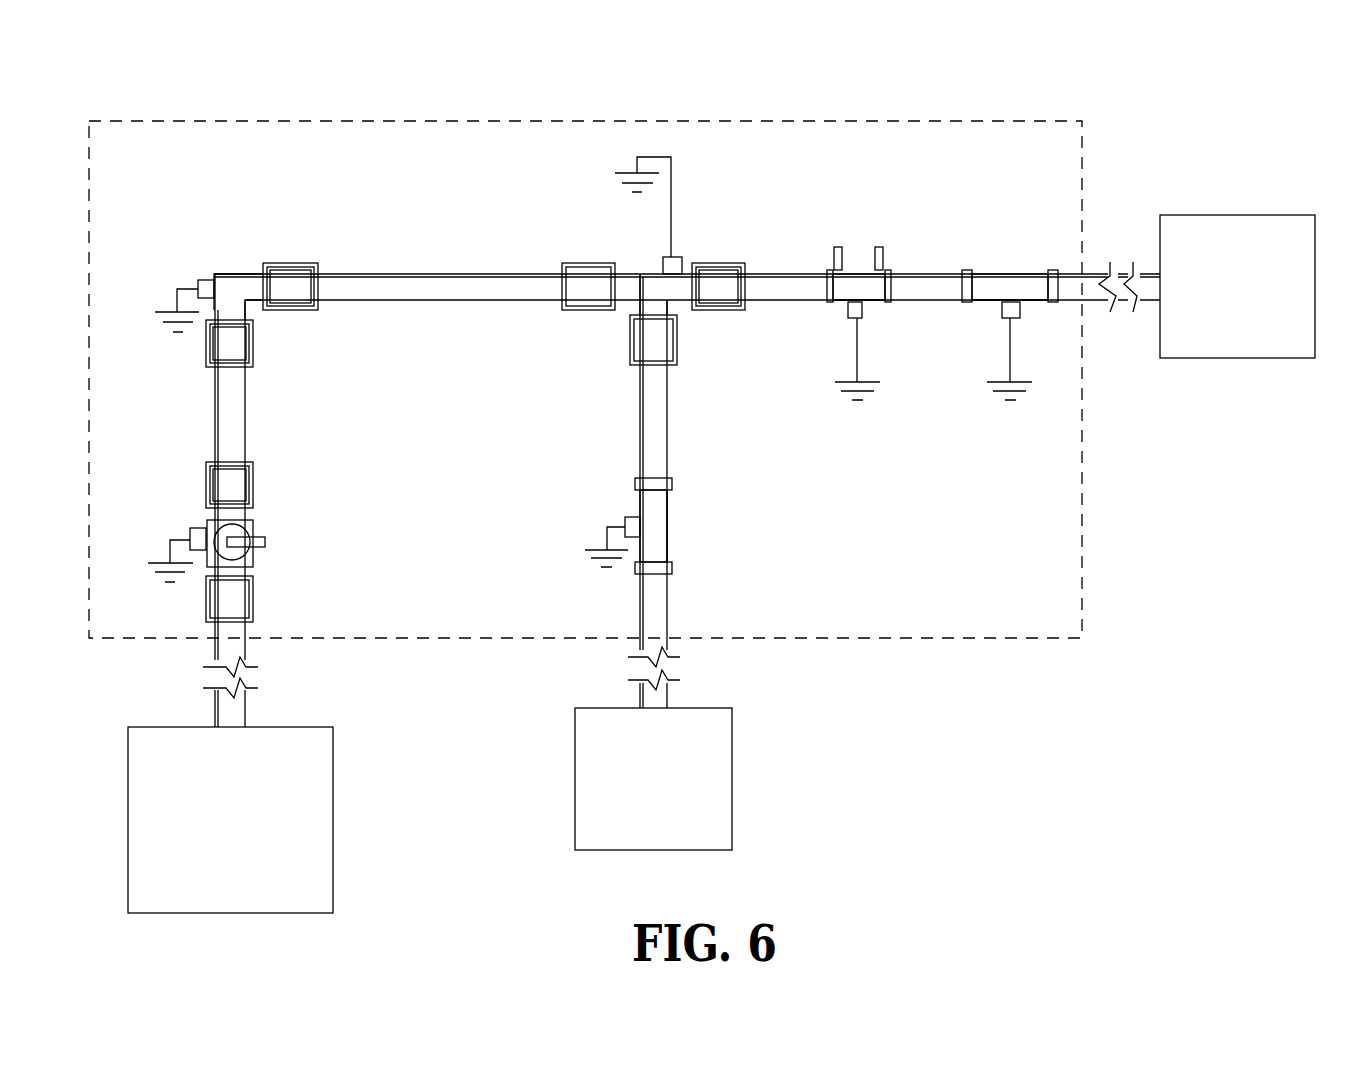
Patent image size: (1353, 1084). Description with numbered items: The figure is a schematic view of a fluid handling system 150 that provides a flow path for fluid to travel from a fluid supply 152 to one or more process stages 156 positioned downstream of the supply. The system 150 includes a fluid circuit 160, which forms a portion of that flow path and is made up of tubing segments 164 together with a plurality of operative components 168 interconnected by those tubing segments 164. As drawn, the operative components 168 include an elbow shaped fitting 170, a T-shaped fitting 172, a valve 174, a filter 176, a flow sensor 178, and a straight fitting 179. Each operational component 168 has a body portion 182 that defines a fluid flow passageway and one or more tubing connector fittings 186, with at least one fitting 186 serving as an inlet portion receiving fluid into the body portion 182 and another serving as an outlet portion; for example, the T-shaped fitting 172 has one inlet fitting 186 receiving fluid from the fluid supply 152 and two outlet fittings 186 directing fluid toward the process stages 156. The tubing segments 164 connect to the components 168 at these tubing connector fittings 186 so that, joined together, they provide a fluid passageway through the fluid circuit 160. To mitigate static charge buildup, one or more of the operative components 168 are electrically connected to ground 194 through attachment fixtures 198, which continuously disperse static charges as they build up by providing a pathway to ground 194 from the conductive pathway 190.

The fluid handling system 150 is at (1177, 76).
The fluid supply 152 is at (333, 782).
The process stages 156 is at (1240, 358).
The fluid circuit 160 is at (282, 120).
The tubing segments 164 is at (246, 400).
The operative components 168 is at (295, 320).
The elbow shaped fitting 170 is at (252, 360).
The T-shaped fitting 172 is at (650, 285).
The valve 174 is at (252, 525).
The filter 176 is at (985, 305).
The flow sensor 178 is at (863, 320).
The straight fitting 179 is at (667, 500).
The body portion 182 is at (238, 285).
The tubing connector fittings 186 is at (292, 275).
The conductive pathway 190 is at (509, 262).
The ground 194 is at (172, 312).
The attachment fixtures 198 is at (204, 280).